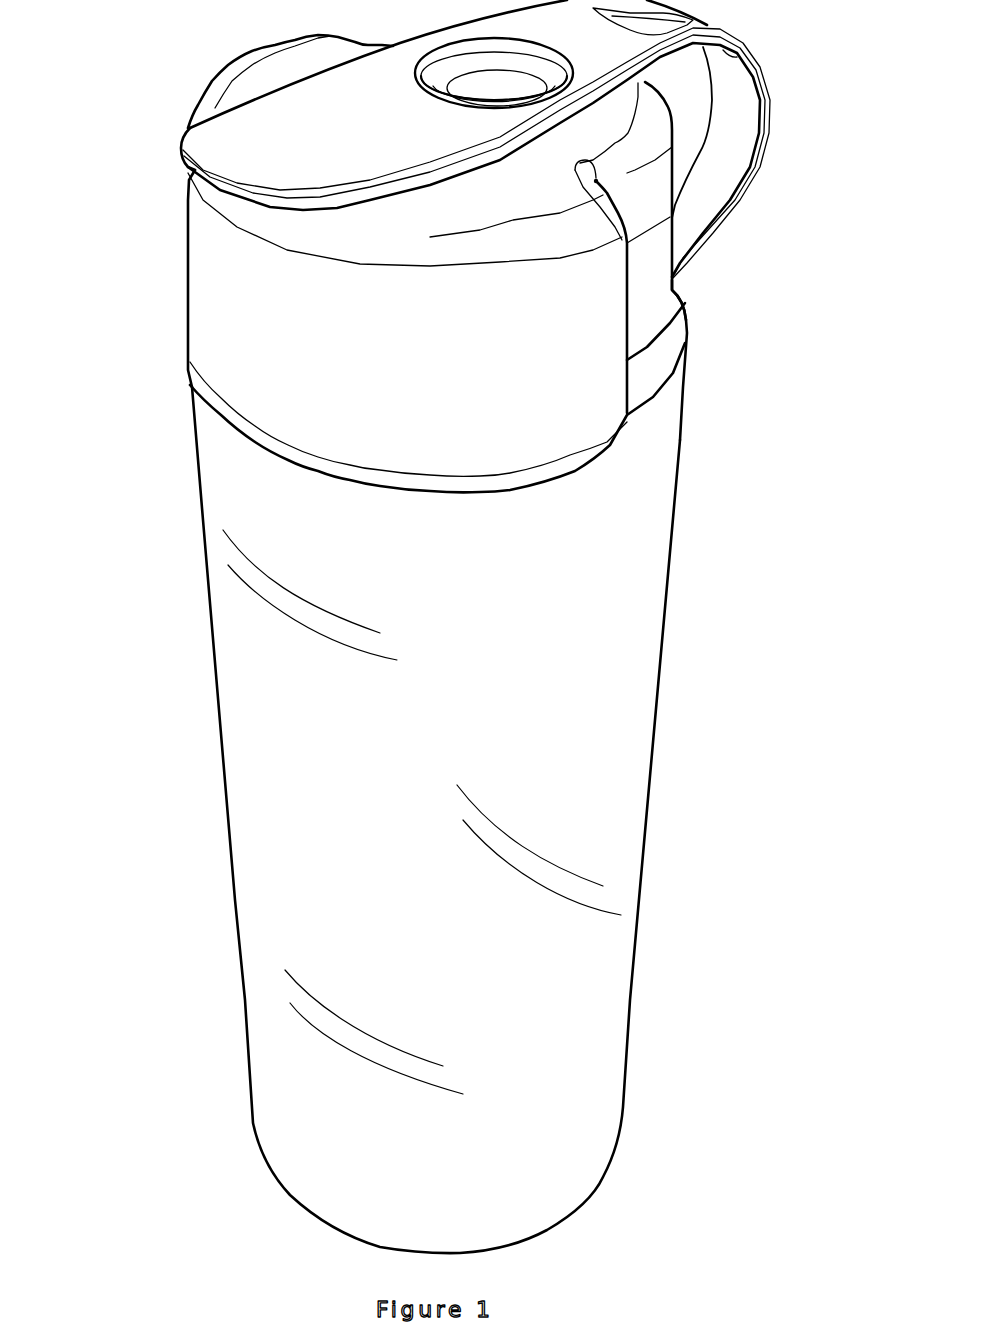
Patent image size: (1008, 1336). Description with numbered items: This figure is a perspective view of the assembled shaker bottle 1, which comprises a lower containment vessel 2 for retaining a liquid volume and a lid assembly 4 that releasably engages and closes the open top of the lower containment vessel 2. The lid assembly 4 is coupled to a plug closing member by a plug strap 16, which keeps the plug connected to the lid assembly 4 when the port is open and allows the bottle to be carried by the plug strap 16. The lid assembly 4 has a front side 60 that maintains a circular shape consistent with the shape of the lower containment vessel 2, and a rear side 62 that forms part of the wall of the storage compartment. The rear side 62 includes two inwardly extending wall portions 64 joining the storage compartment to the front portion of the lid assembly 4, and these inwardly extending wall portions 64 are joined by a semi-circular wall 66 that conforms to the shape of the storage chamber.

The shaker bottle 1 is at (460, 626).
The lower containment vessel 2 is at (243, 847).
The lid assembly 4 is at (533, 206).
The plug strap 16 is at (767, 68).
The front side 60 is at (165, 338).
The rear side 62 is at (700, 288).
The inwardly extending wall portions 64 is at (362, 35).
The semi-circular wall 66 is at (724, 217).